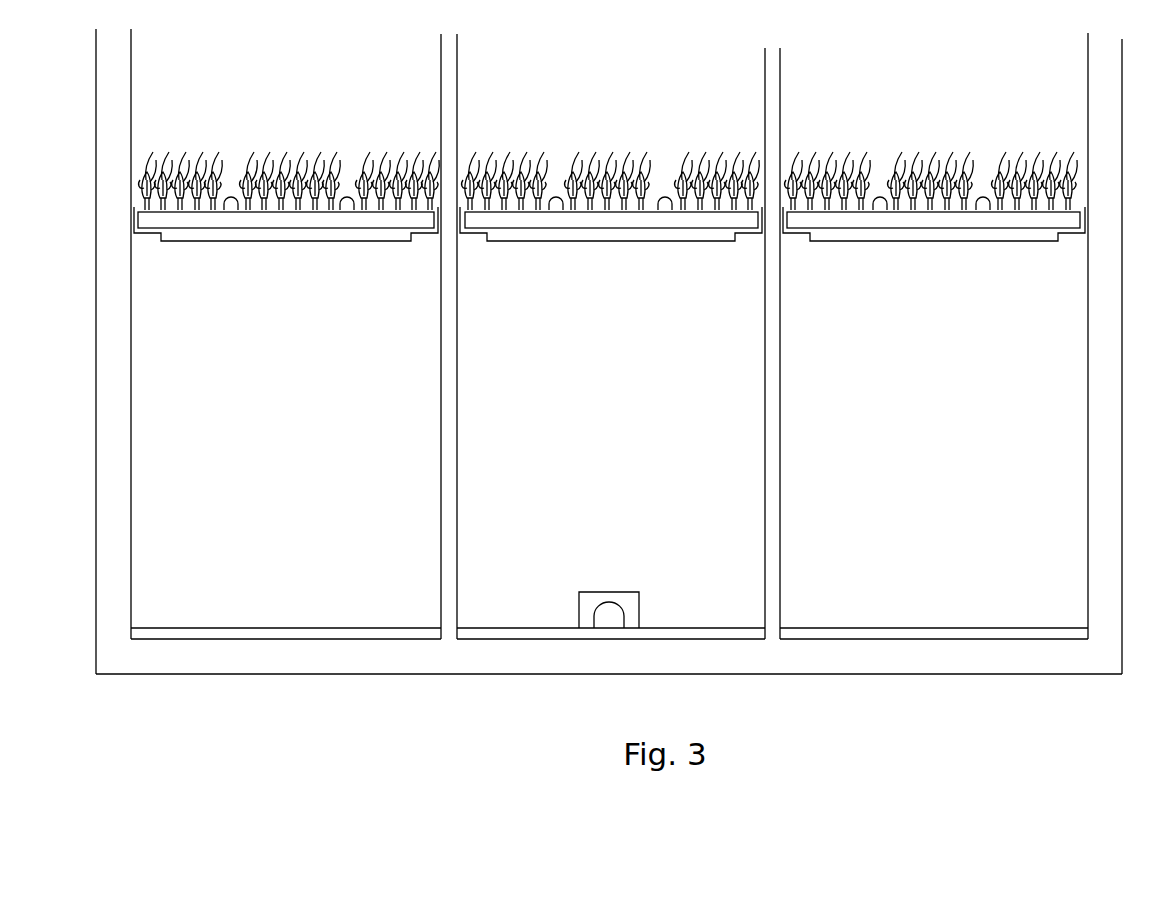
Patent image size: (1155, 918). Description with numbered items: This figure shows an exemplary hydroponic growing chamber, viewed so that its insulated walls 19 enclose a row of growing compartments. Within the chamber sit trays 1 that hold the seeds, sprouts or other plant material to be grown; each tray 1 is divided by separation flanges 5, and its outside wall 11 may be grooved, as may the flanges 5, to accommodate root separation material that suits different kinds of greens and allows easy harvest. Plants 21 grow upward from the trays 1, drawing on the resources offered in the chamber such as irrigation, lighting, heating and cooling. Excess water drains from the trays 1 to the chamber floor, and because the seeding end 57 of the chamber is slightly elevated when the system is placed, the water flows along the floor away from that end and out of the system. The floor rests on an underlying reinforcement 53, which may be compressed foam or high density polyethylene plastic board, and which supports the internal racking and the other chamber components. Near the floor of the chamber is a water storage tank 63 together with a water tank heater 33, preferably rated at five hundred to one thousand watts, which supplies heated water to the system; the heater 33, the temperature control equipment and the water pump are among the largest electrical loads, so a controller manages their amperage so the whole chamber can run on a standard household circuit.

The tray 1 is at (203, 220).
The separation flanges 5 is at (341, 199).
The outside wall 11 is at (337, 221).
The insulated walls 19 is at (113, 360).
The plants 21 is at (199, 152).
The water tank heater 33 is at (610, 612).
The underlying reinforcement 53 is at (207, 628).
The seeding end 57 is at (293, 445).
The water storage tank 63 is at (579, 609).